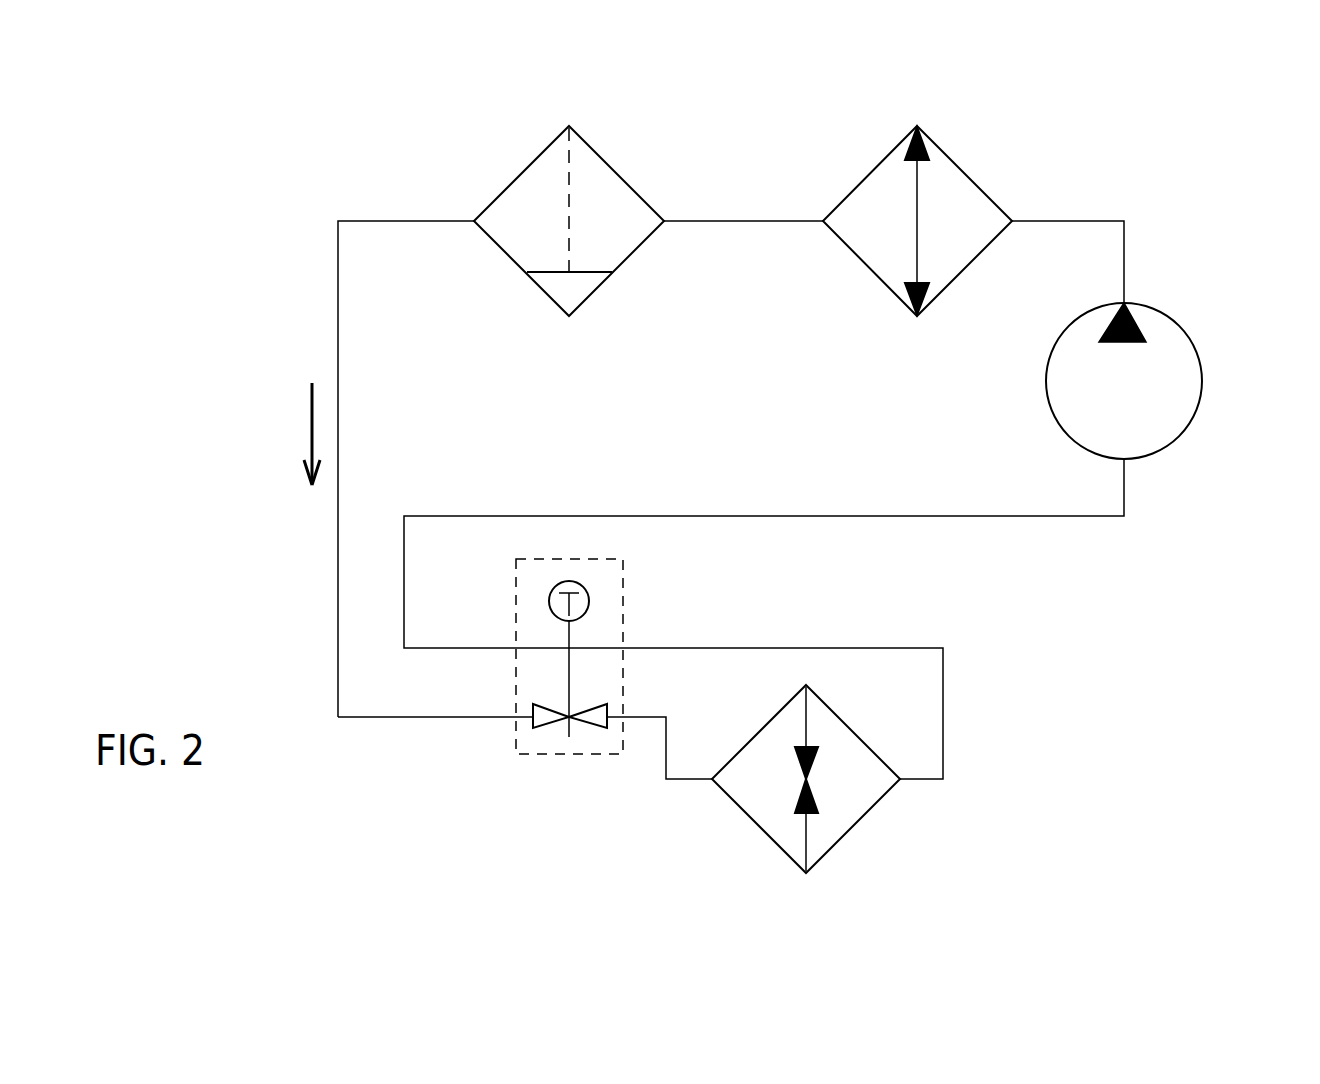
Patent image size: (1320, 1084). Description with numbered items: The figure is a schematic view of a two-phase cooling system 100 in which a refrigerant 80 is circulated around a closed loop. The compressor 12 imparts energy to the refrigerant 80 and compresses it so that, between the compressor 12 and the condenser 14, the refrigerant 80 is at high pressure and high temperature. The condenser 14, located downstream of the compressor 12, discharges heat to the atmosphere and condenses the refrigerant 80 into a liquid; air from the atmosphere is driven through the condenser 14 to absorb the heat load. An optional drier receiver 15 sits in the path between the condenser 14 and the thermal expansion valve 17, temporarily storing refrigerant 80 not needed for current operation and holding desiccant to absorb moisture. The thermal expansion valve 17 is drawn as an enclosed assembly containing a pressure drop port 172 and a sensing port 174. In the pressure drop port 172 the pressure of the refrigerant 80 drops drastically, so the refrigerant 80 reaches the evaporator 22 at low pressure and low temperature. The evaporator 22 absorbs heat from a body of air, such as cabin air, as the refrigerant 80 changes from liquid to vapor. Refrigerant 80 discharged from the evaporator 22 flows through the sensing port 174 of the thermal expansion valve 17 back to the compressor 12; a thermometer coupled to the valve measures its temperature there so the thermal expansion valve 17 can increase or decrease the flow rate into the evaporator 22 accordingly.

The two-phase cooling system 100 is at (1176, 157).
The drier receiver 15 is at (602, 158).
The condenser 14 is at (957, 159).
The compressor 12 is at (1175, 319).
The refrigerant 80 is at (311, 428).
The thermal expansion valve 17 is at (548, 703).
The sensing port 174 is at (590, 633).
The pressure drop port 172 is at (586, 728).
The evaporator 22 is at (850, 831).